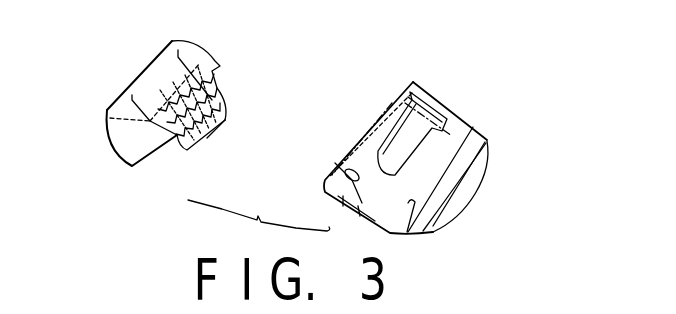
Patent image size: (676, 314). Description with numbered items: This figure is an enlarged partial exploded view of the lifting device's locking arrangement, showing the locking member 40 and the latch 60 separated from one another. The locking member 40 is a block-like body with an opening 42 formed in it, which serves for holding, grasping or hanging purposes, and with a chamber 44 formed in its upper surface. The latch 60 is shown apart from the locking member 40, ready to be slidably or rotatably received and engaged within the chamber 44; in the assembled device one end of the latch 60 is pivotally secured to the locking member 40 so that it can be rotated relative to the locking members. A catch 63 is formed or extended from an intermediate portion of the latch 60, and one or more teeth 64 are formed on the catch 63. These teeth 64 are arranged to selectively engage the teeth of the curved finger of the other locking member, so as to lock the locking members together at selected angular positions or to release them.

The latch 60 is at (124, 87).
The catch 63 is at (207, 138).
The teeth 64 is at (152, 80).
The locking member 40 is at (478, 140).
The opening 42 is at (418, 215).
The chamber 44 is at (427, 108).